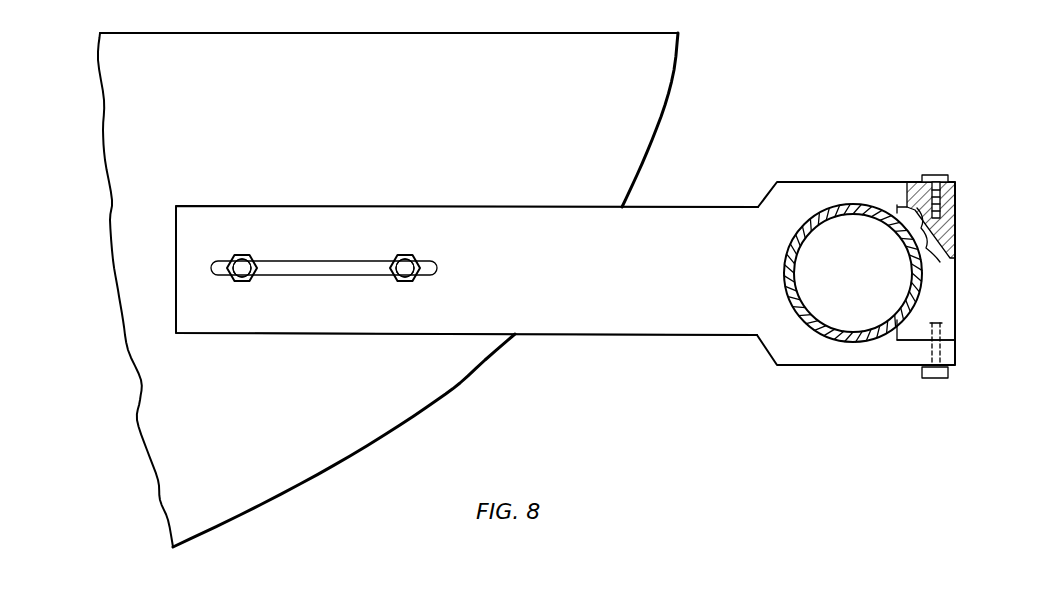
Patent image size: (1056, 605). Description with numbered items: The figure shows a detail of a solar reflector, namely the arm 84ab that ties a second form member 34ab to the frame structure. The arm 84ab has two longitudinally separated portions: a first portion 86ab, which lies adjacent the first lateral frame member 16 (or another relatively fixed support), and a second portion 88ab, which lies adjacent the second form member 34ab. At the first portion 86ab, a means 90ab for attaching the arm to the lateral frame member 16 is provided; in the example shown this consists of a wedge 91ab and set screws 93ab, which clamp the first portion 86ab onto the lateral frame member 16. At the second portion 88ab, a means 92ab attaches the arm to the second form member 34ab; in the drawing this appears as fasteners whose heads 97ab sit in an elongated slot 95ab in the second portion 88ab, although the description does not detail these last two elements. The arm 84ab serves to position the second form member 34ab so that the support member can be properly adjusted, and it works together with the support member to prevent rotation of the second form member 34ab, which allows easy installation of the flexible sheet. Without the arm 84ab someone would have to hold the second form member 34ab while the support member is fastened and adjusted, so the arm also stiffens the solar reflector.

The second form member 34ab is at (668, 100).
The second portion 88ab is at (232, 204).
The arm 84ab is at (632, 277).
The means for attaching the second portion 92ab is at (400, 250).
The bolt heads 97ab is at (393, 283).
The slot 95ab is at (437, 268).
The first portion 86ab is at (876, 173).
The first lateral frame member 16 is at (805, 215).
The means for attaching the first portion 90ab is at (968, 211).
The set screws 93ab is at (921, 177).
The wedge 91ab is at (938, 288).